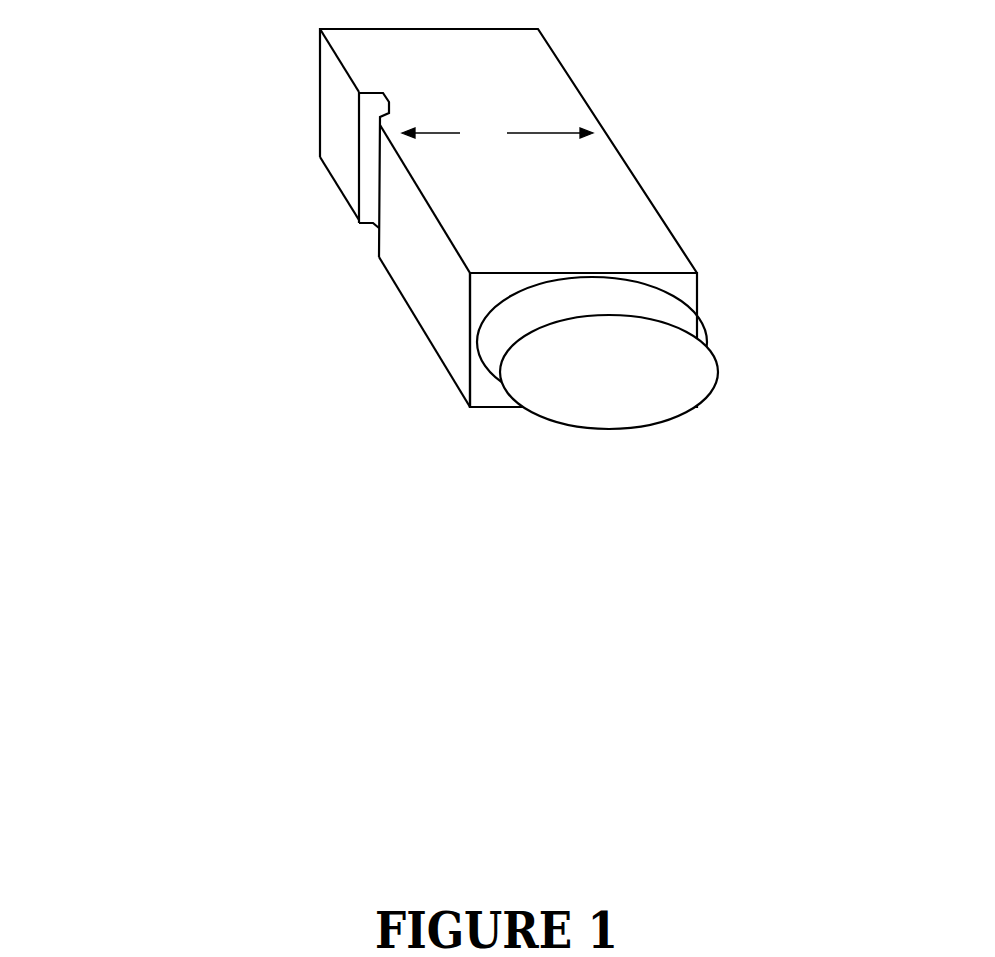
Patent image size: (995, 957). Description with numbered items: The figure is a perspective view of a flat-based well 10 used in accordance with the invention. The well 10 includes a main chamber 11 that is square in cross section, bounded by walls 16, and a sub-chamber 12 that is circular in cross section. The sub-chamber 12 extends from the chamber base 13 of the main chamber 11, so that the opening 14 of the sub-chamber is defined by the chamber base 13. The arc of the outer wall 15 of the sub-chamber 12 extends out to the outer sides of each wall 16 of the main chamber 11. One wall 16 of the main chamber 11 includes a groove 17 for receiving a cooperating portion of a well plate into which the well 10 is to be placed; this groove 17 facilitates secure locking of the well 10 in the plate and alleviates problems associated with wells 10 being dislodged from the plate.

The flat-based well 10 is at (456, 315).
The main chamber 11 is at (588, 210).
The sub-chamber 12 is at (597, 402).
The chamber base 13 is at (466, 418).
The opening 14 is at (668, 290).
The outer wall 15 is at (503, 315).
The wall 16 is at (497, 137).
The groove 17 is at (351, 179).